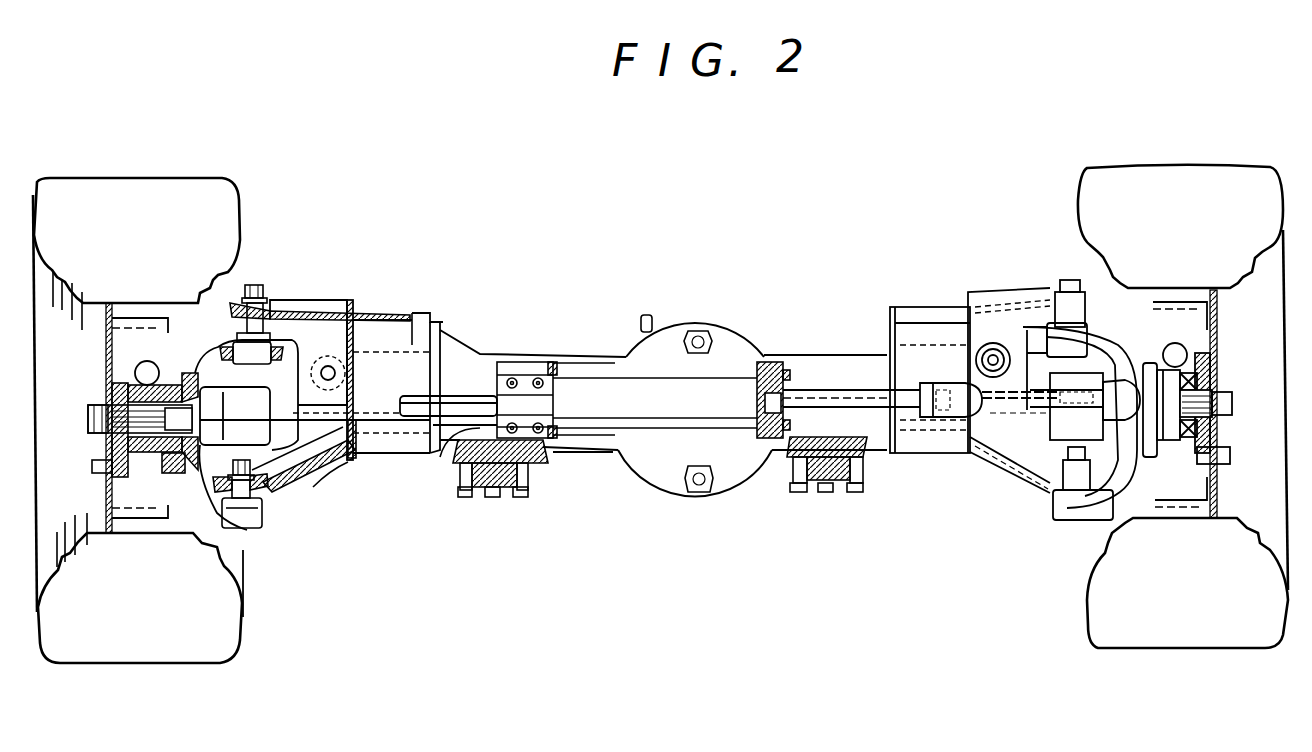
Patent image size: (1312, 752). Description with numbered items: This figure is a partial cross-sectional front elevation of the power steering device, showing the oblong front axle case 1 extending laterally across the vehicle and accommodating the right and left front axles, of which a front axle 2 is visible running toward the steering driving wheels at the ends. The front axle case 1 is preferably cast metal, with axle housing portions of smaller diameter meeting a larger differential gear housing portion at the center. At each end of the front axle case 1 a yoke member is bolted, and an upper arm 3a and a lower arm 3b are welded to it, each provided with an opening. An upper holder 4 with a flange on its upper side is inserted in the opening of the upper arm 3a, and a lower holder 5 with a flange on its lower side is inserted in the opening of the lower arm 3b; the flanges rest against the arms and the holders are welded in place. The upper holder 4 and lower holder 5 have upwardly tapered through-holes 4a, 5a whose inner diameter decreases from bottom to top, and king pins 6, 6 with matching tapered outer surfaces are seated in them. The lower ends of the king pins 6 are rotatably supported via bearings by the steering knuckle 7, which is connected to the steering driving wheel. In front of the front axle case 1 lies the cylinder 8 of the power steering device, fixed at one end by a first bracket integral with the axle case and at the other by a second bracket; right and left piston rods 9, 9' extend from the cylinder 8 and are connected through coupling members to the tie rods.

The front axle case 1 is at (733, 470).
The front axle 2 is at (375, 398).
The upper arm 3a is at (315, 303).
The lower arm 3b is at (337, 467).
The upper holder 4 is at (272, 303).
The through-hole 4a is at (253, 296).
The lower holder 5 is at (283, 495).
The through-hole 5a is at (257, 497).
The king pin 6 is at (235, 305).
The steering knuckle 7 is at (197, 497).
The cylinder 8 is at (640, 407).
The piston rod 9 is at (484, 453).
The piston rod 9' is at (841, 468).